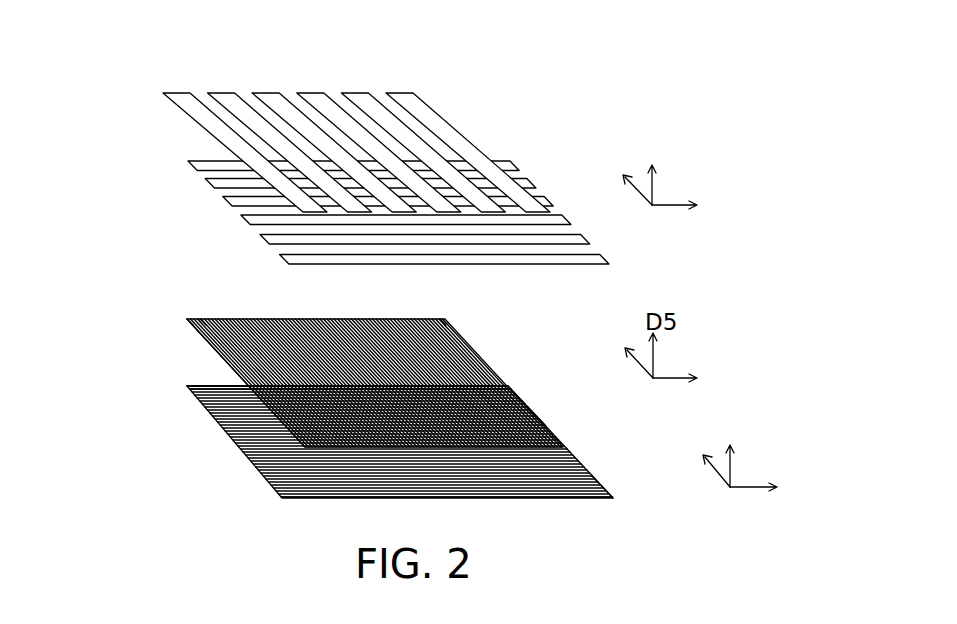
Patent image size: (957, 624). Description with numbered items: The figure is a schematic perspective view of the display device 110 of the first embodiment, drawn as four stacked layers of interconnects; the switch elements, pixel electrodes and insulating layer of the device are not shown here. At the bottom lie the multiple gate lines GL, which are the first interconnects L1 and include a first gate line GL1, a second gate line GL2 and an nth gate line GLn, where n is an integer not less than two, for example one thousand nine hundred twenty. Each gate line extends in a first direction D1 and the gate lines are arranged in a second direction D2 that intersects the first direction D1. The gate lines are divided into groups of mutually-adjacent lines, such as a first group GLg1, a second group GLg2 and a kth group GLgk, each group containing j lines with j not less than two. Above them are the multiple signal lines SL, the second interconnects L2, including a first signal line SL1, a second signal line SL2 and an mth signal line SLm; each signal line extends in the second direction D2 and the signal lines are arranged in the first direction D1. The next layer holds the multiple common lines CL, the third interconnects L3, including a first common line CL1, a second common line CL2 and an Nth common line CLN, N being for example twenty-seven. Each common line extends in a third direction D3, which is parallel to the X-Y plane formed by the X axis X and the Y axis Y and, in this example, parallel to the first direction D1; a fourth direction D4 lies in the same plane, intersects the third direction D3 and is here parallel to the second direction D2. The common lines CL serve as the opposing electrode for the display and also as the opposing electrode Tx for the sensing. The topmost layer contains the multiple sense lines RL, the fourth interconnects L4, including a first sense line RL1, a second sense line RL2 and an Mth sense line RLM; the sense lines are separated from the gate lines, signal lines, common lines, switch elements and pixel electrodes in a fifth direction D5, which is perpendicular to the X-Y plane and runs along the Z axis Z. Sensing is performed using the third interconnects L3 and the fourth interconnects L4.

The display device 110 is at (609, 116).
The sense lines RL is at (352, 115).
The fourth interconnects L4 is at (352, 115).
The first sense line RL1 is at (185, 91).
The second sense line RL2 is at (229, 91).
The Mth sense line RLM is at (463, 134).
The common lines CL is at (333, 211).
The third interconnects L3 is at (333, 211).
The opposing electrode Tx is at (333, 211).
The first common line CL1 is at (187, 162).
The second common line CL2 is at (193, 164).
The Nth common line CLN is at (408, 254).
The signal lines SL is at (344, 352).
The second interconnects L2 is at (344, 352).
The first signal line SL1 is at (186, 319).
The second signal line SL2 is at (216, 312).
The mth signal line SLm is at (443, 318).
The gate lines GL is at (395, 437).
The first interconnects L1 is at (395, 437).
The first gate line GL1 is at (187, 386).
The second gate line GL2 is at (192, 391).
The nth gate line GLn is at (282, 494).
The first group GLg1 is at (515, 378).
The second group GLg2 is at (537, 403).
The kth group GLgk is at (597, 470).
The first direction D1 is at (692, 379).
The second direction D2 is at (628, 352).
The third direction D3 is at (692, 209).
The fourth direction D4 is at (628, 179).
The fifth direction D5 is at (663, 170).
The X axis X is at (762, 487).
The Y axis Y is at (707, 459).
The Z axis Z is at (731, 452).